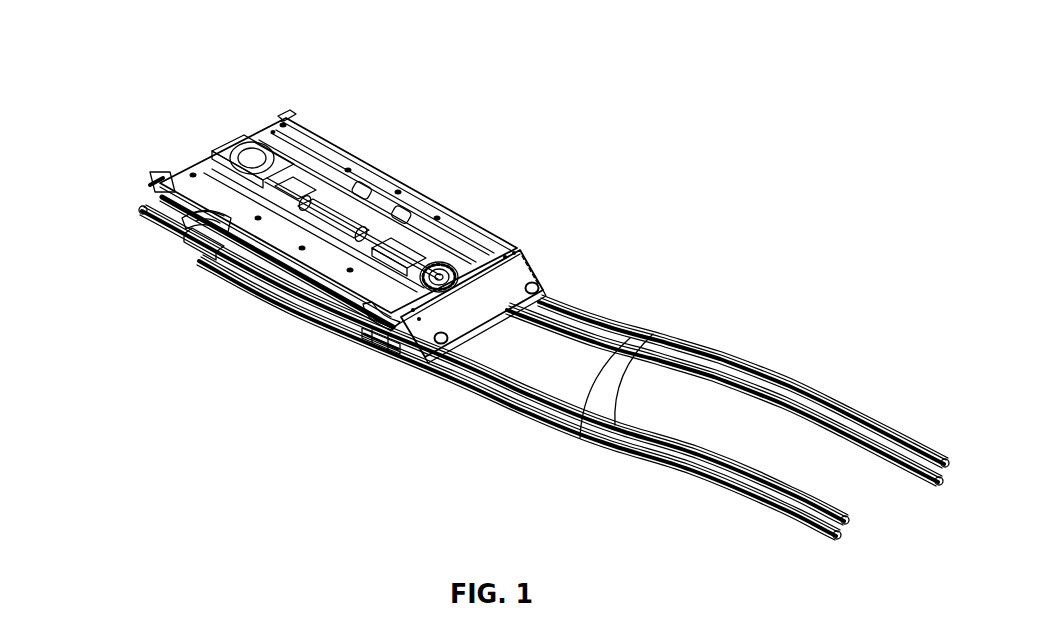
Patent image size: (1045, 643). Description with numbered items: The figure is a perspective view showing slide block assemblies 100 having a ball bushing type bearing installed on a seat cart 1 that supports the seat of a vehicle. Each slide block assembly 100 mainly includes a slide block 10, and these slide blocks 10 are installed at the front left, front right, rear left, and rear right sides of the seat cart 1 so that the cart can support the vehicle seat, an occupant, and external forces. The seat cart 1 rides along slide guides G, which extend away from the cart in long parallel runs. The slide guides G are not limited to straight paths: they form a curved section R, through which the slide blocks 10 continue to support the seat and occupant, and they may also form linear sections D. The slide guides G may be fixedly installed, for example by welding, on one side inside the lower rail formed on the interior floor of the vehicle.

The slide block assembly 100 is at (348, 243).
The slide block 10 is at (340, 147).
The seat cart 1 is at (383, 183).
The slide guide G is at (677, 372).
The curved section R is at (510, 418).
The linear section D is at (753, 498).